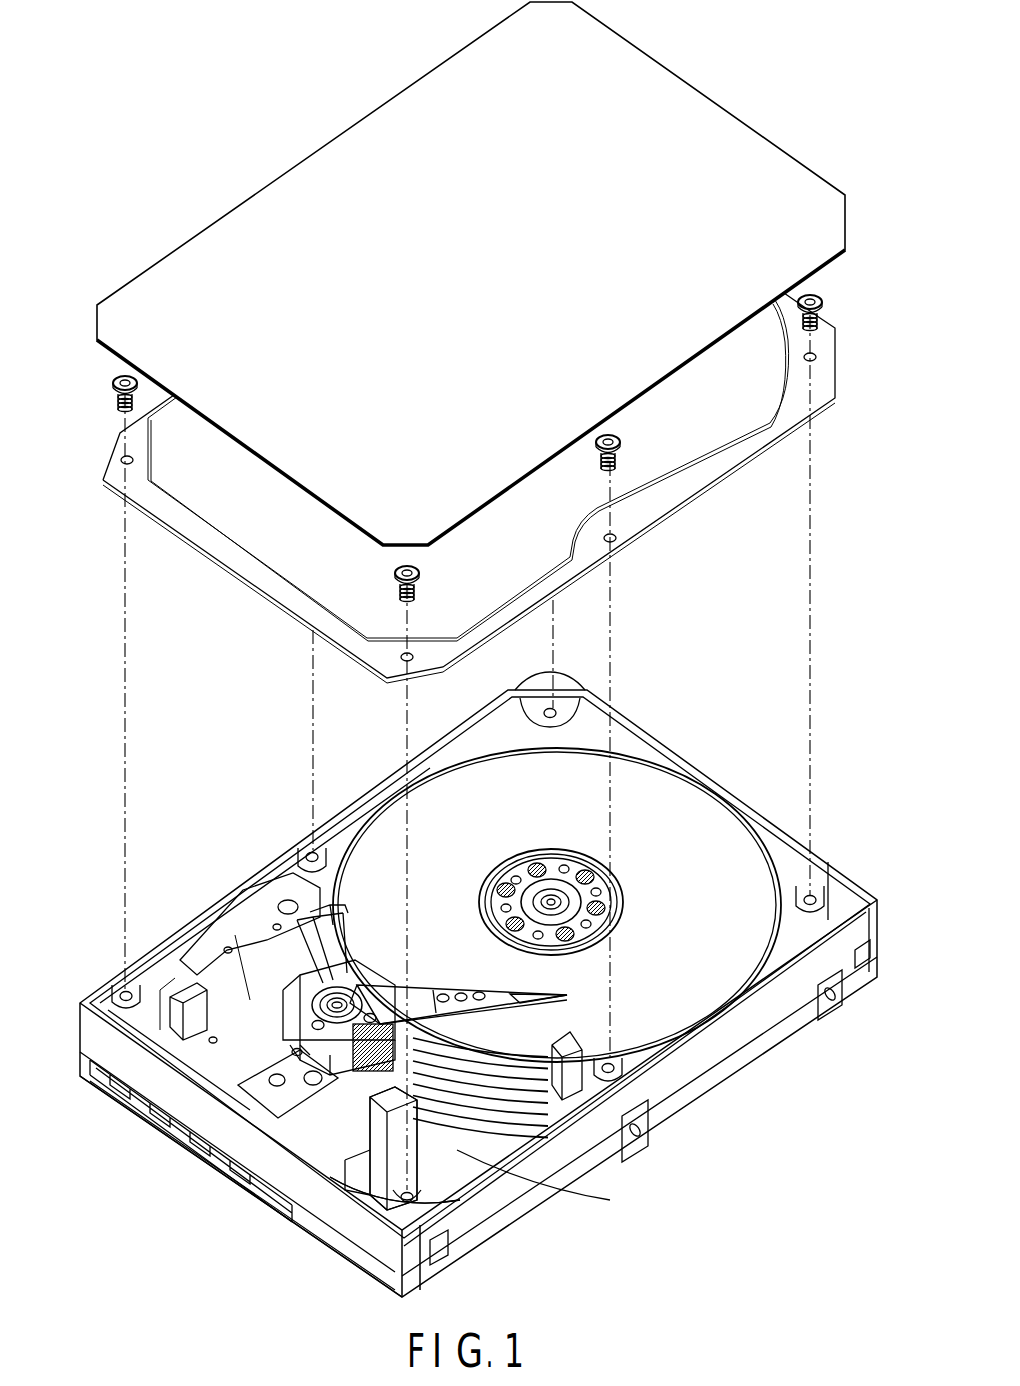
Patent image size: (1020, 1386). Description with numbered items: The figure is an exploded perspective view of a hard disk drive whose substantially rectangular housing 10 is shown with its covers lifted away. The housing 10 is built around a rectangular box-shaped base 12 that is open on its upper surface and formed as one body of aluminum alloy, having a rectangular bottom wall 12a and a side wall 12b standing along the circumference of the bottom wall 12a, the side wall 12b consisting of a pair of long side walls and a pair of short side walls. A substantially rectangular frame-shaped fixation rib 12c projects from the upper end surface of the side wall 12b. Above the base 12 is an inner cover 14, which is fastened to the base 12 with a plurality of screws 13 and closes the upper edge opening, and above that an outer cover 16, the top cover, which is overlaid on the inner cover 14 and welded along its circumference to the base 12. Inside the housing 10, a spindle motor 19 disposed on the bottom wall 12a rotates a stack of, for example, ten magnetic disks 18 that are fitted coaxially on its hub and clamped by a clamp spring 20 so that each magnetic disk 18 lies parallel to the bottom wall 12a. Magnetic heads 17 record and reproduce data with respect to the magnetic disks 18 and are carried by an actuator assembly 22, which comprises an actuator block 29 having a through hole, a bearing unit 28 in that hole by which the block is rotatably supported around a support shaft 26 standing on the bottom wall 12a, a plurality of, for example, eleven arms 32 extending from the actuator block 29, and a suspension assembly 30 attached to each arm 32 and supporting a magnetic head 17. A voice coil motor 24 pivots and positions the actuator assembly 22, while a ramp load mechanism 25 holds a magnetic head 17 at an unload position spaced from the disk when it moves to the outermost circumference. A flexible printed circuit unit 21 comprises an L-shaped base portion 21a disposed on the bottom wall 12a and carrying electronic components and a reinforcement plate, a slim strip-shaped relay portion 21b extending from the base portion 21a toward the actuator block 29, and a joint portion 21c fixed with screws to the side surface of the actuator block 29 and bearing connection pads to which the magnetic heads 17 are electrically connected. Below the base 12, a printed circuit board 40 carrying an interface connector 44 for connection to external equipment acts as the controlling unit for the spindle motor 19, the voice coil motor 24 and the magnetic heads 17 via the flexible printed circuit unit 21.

The housing 10 is at (224, 722).
The base 12 is at (697, 1093).
The bottom wall 12a is at (500, 1148).
The side wall 12b is at (757, 1020).
The fixation rib 12c is at (667, 743).
The screws 13 is at (116, 378).
The inner cover 14 is at (677, 497).
The outer cover (top cover) 16 is at (718, 130).
The magnetic heads 17 is at (553, 1013).
The magnetic disk 18 is at (697, 817).
The spindle motor 19 is at (555, 880).
The clamp spring 20 is at (517, 855).
The flexible printed circuit unit (FPC unit) 21 is at (383, 1173).
The base portion 21a is at (333, 1195).
The relay portion 21b is at (478, 1140).
The joint portion 21c is at (297, 1050).
The actuator assembly 22 is at (425, 980).
The voice coil motor (VCM) 24 is at (217, 978).
The ramp load mechanism 25 is at (567, 1047).
The support shaft 26 is at (350, 985).
The bearing unit 28 is at (320, 1020).
The actuator block 29 is at (342, 946).
The suspension assembly (head gimbal assembly) 30 is at (537, 987).
The arms 32 is at (452, 985).
The printed circuit board 40 is at (350, 1273).
The interface connector 44 is at (172, 1138).